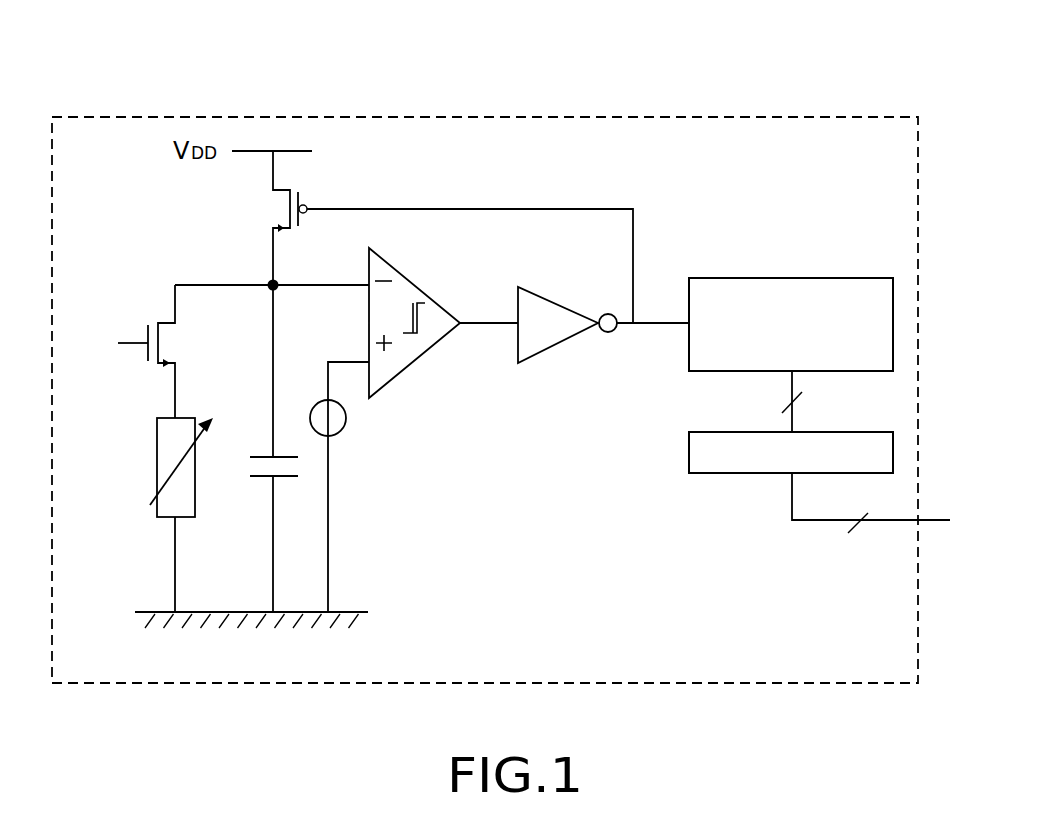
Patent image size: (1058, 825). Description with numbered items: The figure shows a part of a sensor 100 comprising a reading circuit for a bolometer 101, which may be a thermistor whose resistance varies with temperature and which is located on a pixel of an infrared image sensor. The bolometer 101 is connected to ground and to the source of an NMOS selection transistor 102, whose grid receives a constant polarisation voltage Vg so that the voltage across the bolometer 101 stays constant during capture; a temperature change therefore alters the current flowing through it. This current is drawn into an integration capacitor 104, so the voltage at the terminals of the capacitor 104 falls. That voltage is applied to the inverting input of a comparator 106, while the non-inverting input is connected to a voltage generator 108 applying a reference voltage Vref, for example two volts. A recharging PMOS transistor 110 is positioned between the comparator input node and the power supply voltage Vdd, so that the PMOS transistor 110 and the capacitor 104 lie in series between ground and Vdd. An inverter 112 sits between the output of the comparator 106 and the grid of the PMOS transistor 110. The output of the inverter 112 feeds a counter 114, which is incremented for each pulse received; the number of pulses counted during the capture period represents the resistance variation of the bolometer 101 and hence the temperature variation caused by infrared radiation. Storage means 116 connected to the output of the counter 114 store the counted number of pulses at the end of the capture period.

The sensor 100 is at (782, 116).
The bolometer 101 is at (162, 508).
The NMOS selection transistor 102 is at (168, 321).
The integration capacitor 104 is at (288, 478).
The comparator 106 is at (408, 278).
The voltage generator 108 is at (347, 414).
The recharging PMOS transistor 110 is at (290, 190).
The inverter 112 is at (558, 337).
The counter 114 is at (712, 278).
The storage means 116 is at (720, 468).